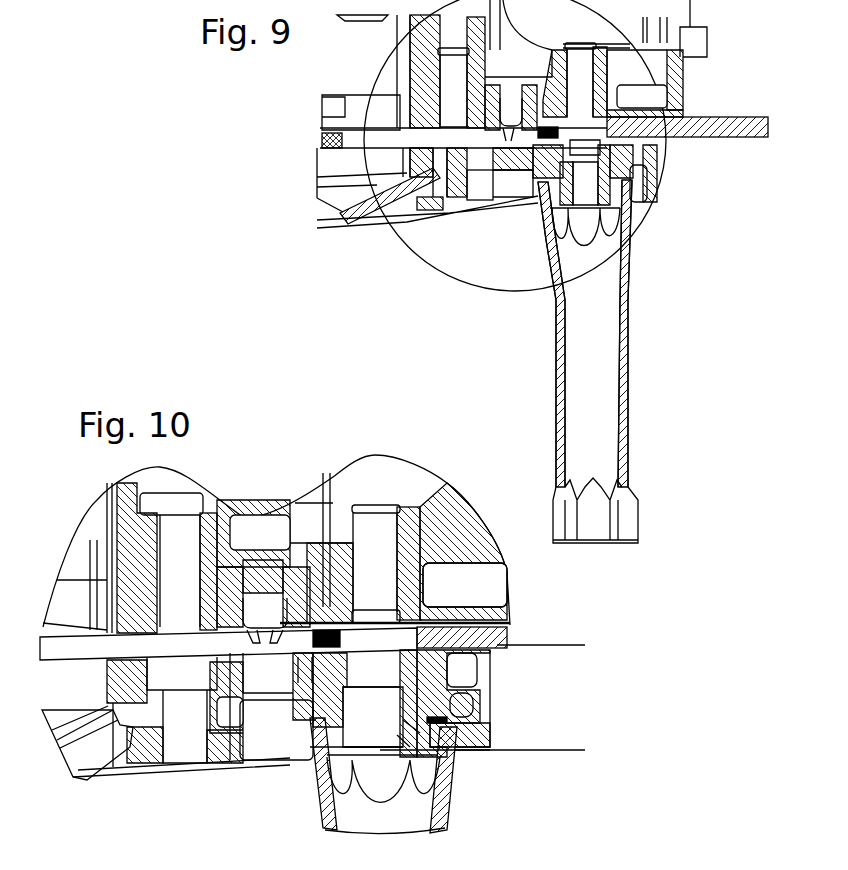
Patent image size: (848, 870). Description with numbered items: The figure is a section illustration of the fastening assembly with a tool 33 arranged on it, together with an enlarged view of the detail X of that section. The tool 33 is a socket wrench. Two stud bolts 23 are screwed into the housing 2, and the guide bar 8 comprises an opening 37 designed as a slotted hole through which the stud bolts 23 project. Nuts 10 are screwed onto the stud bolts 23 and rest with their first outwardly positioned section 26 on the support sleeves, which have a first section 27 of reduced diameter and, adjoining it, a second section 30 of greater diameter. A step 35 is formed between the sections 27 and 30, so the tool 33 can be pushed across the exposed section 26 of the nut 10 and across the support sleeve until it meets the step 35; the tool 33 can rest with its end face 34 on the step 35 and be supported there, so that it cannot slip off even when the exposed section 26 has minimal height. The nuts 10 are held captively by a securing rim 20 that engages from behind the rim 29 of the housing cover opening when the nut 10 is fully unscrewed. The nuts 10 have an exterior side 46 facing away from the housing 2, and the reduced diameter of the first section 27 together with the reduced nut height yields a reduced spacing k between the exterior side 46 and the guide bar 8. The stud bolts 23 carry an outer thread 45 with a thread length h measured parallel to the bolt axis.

In FIG. 9, the housing 2 is at (683, 85).
In FIG. 10, the housing 2 is at (493, 613).
In FIG. 9, the guide bar 8 is at (727, 127).
In FIG. 10, the guide bar 8 is at (493, 637).
In FIG. 9, the nut 10 is at (622, 197).
In FIG. 10, the nut 10 is at (232, 750).
In FIG. 10, the securing rim 20 is at (130, 660).
In FIG. 9, the stud bolt 23 is at (590, 153).
In FIG. 10, the stud bolt 23 is at (377, 525).
In FIG. 10, the first outwardly positioned section of the nut 26 is at (337, 745).
In FIG. 10, the first section of the support sleeve 27 is at (425, 718).
In FIG. 10, the rim of the housing cover opening 29 is at (147, 712).
In FIG. 10, the second section of the support sleeve 30 is at (470, 695).
In FIG. 9, the tool 33 is at (557, 347).
In FIG. 10, the tool 33 is at (440, 807).
In FIG. 10, the end face of the tool 34 is at (460, 710).
In FIG. 10, the step 35 is at (452, 620).
In FIG. 9, the opening 37 is at (355, 140).
In FIG. 10, the outer thread 45 is at (403, 725).
In FIG. 10, the exterior side of the nut 46 is at (397, 740).
In FIG. 9, the detail X is at (602, 262).
In FIG. 10, the thread length h is at (386, 690).
In FIG. 10, the spacing k is at (580, 650).